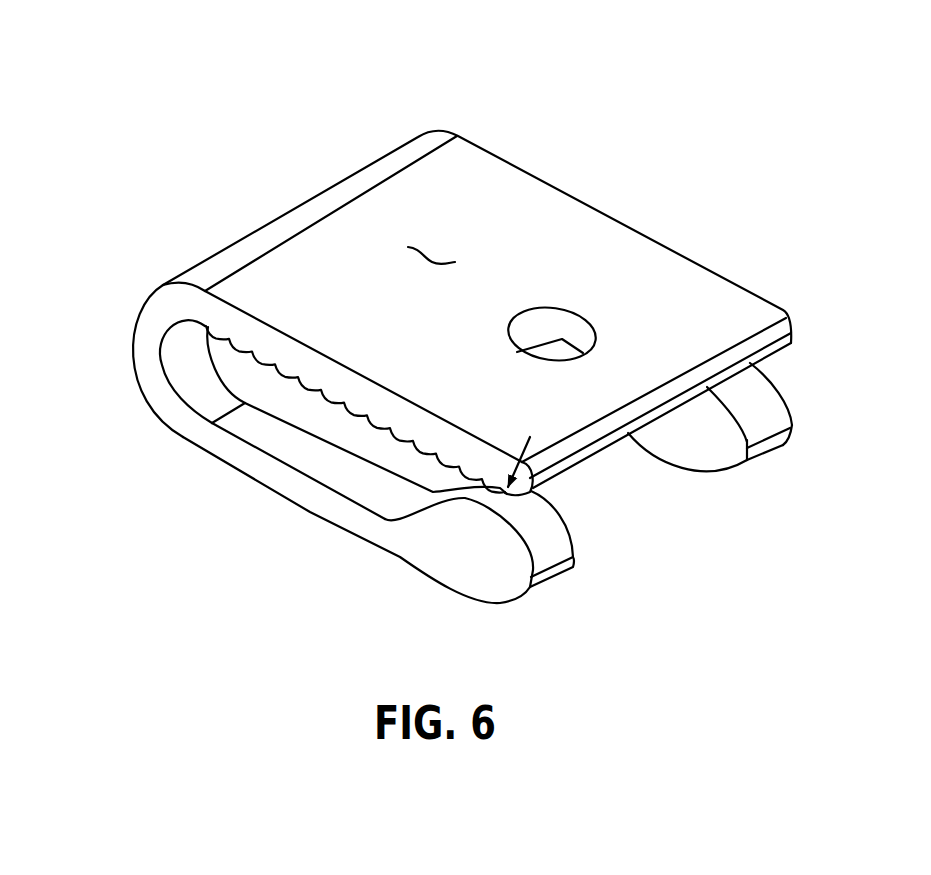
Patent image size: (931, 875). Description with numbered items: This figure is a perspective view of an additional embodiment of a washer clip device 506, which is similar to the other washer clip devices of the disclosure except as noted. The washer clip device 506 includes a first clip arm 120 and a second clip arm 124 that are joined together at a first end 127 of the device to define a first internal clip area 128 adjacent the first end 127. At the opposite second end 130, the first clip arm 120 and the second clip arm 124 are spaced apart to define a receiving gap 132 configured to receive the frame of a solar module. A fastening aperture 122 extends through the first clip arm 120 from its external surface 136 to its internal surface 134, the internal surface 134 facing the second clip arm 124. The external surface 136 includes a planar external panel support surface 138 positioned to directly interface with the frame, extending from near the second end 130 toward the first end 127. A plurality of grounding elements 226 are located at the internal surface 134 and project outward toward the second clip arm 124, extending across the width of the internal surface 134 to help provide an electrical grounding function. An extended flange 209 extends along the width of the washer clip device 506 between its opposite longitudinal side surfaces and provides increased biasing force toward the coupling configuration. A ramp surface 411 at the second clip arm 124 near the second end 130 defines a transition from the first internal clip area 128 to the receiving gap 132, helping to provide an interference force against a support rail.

The washer clip device 506 is at (372, 98).
The external surface 136 is at (517, 190).
The extended flange 209 is at (296, 209).
The first clip arm 120 is at (386, 389).
The fastening aperture 122 is at (504, 320).
The planar external panel support surface 138 is at (436, 257).
The first end 127 is at (128, 311).
The second clip arm 124 is at (296, 493).
The first internal clip area 128 is at (280, 388).
The internal surface 134 is at (312, 388).
The plurality of grounding elements 226 is at (322, 410).
The ramp surface 411 is at (466, 506).
The receiving gap 132 is at (488, 526).
The second end 130 is at (630, 467).